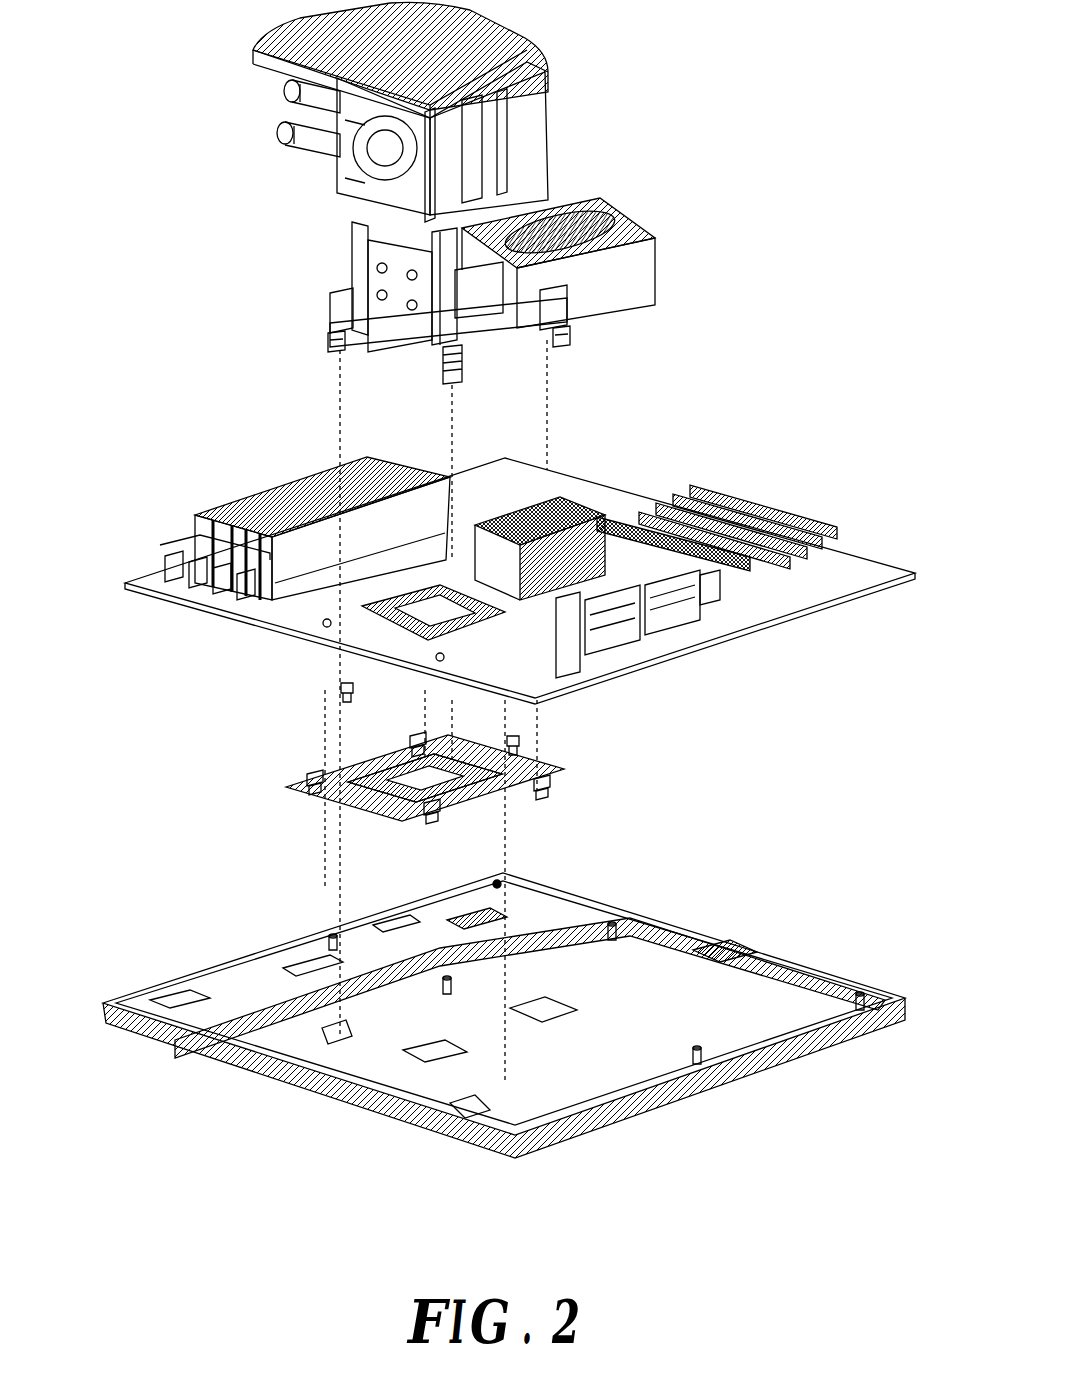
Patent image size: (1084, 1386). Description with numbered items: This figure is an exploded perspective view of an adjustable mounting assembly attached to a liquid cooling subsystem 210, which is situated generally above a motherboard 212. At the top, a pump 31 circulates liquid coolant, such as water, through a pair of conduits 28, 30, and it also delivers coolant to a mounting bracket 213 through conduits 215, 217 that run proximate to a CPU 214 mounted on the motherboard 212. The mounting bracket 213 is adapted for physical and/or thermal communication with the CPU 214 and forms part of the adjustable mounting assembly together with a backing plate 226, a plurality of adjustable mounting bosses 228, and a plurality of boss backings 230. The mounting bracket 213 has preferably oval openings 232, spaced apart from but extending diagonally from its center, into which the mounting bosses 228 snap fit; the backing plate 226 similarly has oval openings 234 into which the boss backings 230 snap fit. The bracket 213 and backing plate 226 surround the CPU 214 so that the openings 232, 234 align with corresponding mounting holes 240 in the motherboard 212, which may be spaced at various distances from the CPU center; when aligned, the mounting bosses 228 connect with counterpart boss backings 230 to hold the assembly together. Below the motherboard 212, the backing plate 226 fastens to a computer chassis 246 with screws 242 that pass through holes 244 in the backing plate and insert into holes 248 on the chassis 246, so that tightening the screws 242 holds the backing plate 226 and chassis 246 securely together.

The conduit 28 is at (308, 133).
The conduit 30 is at (300, 87).
The pump 31 is at (360, 184).
The liquid cooling subsystem 210 is at (270, 350).
The motherboard 212 is at (757, 617).
The mounting bracket 213 is at (413, 350).
The CPU 214 is at (353, 605).
The conduit 215 is at (433, 290).
The conduit 217 is at (458, 290).
The backing plate 226 is at (345, 797).
The adjustable mounting boss 228 is at (343, 308).
The boss backing 230 is at (410, 740).
The opening 232 is at (553, 340).
The opening 234 is at (432, 812).
The mounting hole 240 is at (327, 623).
The screw 242 is at (347, 687).
The hole 244 is at (345, 760).
The computer chassis 246 is at (667, 1117).
The hole 248 is at (335, 1035).